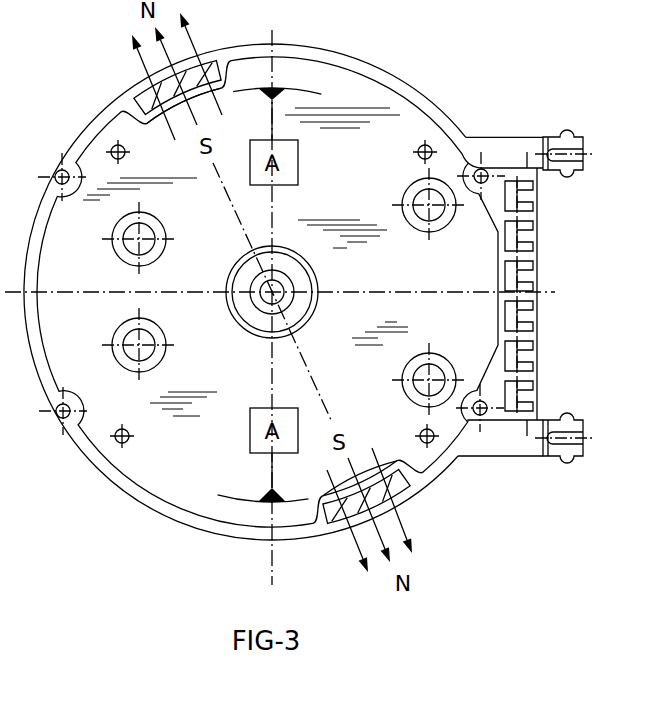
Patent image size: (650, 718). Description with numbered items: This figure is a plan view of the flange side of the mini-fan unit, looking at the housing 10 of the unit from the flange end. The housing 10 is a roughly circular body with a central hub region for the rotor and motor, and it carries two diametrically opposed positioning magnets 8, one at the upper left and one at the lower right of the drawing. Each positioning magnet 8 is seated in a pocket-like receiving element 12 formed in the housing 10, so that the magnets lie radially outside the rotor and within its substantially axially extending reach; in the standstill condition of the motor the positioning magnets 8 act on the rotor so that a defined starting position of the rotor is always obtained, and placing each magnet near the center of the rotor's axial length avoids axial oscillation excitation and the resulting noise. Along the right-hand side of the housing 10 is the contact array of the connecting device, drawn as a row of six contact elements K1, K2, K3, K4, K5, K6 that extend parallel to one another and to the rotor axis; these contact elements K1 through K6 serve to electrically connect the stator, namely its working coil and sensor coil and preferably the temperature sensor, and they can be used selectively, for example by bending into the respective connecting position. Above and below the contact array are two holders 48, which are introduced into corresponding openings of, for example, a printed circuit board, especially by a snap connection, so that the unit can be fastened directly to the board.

The positioning magnets 8 is at (138, 97).
The housing 10 is at (397, 82).
The pocket-like receiving elements 12 is at (219, 80).
The holders 48 is at (566, 136).
The contact element K1 is at (497, 196).
The contact element K2 is at (497, 236).
The contact element K3 is at (497, 276).
The contact element K4 is at (497, 316).
The contact element K5 is at (497, 356).
The contact element K6 is at (497, 396).